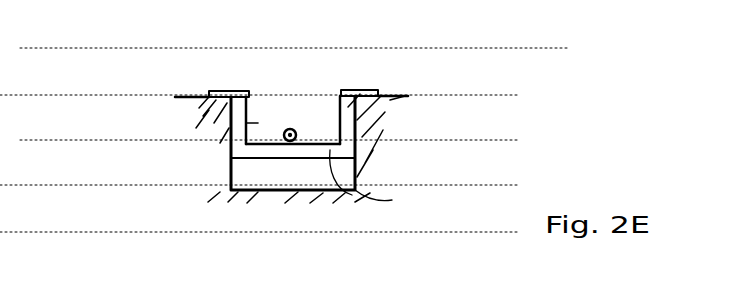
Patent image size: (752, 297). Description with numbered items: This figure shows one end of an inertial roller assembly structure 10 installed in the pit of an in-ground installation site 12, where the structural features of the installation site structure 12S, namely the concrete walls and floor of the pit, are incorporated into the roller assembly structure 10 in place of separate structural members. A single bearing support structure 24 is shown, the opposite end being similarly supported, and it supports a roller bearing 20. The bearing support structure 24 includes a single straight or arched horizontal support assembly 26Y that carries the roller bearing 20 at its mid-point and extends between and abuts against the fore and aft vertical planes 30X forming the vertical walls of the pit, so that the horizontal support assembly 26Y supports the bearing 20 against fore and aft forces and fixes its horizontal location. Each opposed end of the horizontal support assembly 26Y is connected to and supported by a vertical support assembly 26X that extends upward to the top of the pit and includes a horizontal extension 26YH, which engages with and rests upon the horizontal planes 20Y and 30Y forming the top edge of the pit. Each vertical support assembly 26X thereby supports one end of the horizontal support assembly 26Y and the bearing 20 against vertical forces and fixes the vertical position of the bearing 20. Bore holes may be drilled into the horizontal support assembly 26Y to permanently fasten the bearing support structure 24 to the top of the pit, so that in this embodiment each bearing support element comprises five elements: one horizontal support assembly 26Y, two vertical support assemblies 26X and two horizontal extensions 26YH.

The roller assembly structure 10 is at (263, 37).
The installation site 12 is at (360, 72).
The installation site structure 12S is at (230, 155).
The roller bearing 20 is at (293, 129).
The horizontal plane 20Y is at (385, 97).
The bearing support structure 24 is at (352, 196).
The vertical support assembly 26X is at (357, 92).
The horizontal support assembly 26Y is at (308, 144).
The horizontal extension 26YH is at (231, 92).
The vertical plane 30X is at (213, 125).
The horizontal plane 30Y is at (187, 96).